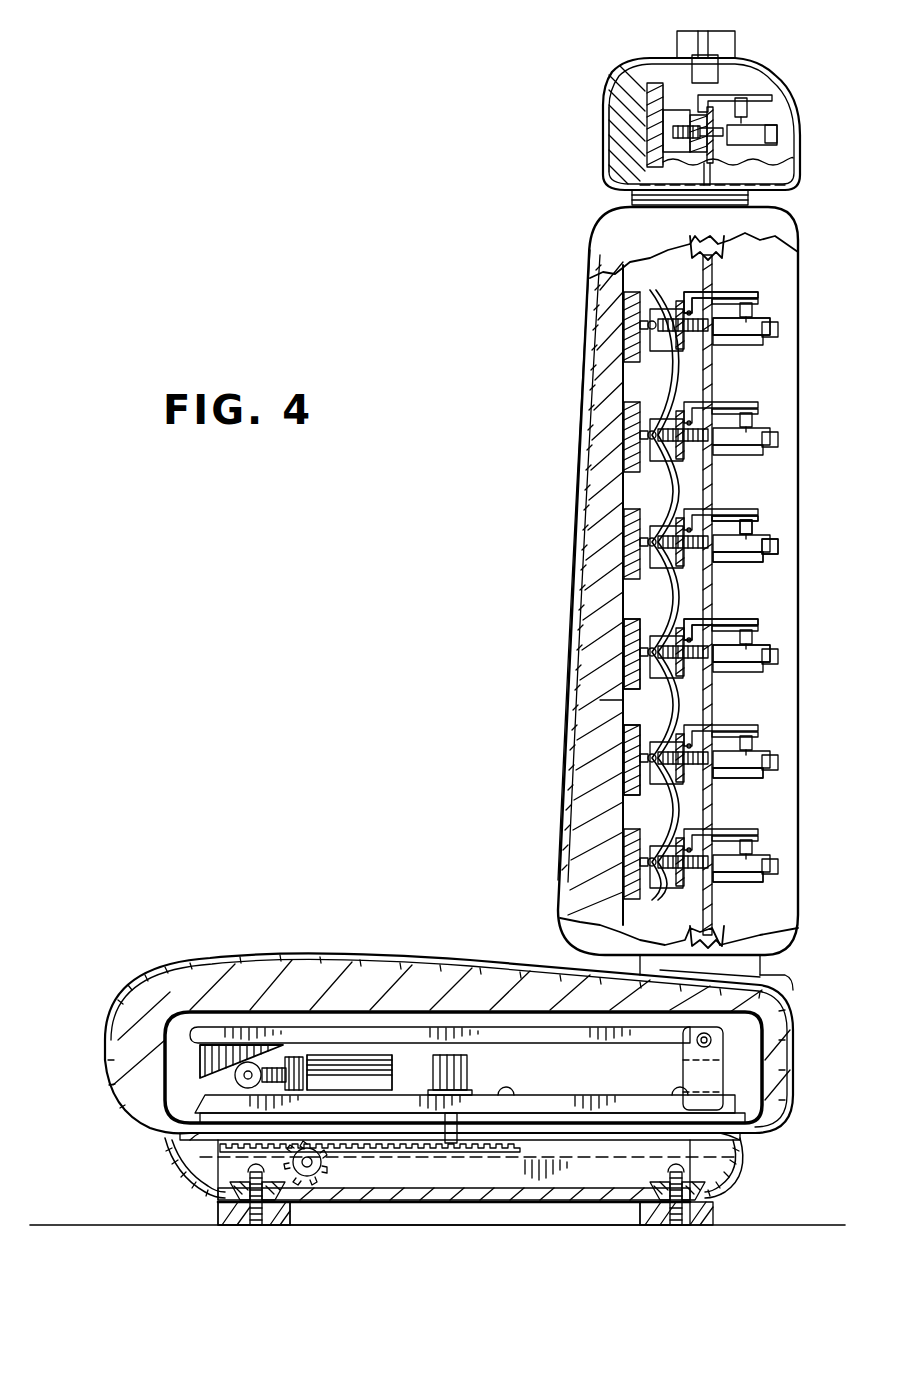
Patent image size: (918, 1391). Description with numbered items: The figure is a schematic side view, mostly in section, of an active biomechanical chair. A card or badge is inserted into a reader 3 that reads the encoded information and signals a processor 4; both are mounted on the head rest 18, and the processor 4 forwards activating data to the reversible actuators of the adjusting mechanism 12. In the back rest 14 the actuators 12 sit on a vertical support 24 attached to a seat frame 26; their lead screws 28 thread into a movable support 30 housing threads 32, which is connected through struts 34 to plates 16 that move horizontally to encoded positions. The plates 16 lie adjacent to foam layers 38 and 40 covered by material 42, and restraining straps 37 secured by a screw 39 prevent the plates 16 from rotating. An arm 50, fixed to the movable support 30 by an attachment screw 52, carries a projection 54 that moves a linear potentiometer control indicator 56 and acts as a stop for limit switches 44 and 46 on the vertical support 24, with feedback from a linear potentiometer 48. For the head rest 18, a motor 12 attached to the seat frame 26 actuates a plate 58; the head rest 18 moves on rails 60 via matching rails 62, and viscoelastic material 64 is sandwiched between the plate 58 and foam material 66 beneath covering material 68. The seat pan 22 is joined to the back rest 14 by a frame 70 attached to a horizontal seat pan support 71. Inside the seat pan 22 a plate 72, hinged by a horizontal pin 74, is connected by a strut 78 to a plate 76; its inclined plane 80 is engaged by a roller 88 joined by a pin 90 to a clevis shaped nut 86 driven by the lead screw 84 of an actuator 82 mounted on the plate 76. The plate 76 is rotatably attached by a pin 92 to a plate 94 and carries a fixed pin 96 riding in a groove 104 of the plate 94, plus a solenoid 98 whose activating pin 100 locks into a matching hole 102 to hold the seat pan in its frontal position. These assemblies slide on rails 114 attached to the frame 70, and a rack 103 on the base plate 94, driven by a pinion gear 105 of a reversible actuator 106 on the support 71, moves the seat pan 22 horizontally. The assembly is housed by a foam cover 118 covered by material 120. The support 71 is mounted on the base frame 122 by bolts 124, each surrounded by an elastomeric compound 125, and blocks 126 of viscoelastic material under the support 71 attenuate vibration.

The reader 3 is at (735, 48).
The processor 4 is at (725, 72).
The adjusting mechanism actuators 12 is at (762, 115).
The back rest 14 is at (590, 240).
The plates 16 is at (620, 745).
The head rest 18 is at (600, 178).
The seat pan 22 is at (105, 1030).
The vertical support 24 is at (712, 270).
The seat frame 26 is at (715, 245).
The lead screws 28 is at (690, 655).
The movable support 30 is at (700, 785).
The threads 32 is at (700, 880).
The struts 34 is at (660, 600).
The restraining straps 37 is at (625, 705).
The foam layer 38 is at (620, 345).
The screw 39 is at (620, 655).
The foam layer 40 is at (605, 400).
The covering material 42 is at (628, 300).
The limit switch 44 is at (758, 312).
The limit switch 46 is at (740, 332).
The linear potentiometer 48 is at (762, 562).
The arm 50 is at (740, 508).
The attachment screw 52 is at (705, 630).
The projection 54 is at (745, 528).
The linear potentiometer control indicator 56 is at (770, 533).
The head support plate 58 is at (655, 82).
The rails 60 is at (750, 205).
The matching rails 62 is at (745, 196).
The viscoelastic material 64 is at (635, 75).
The foam material 66 is at (610, 122).
The covering material 68 is at (603, 145).
The frame 70 is at (785, 975).
The horizontal seat pan support 71 is at (585, 1205).
The plate 72 is at (550, 1040).
The horizontal pin 74 is at (710, 1040).
The plate 76 is at (200, 1112).
The strut 78 is at (712, 1078).
The inclined plane 80 is at (205, 1027).
The actuator 82 is at (380, 1055).
The lead screw 84 is at (345, 1055).
The clevis shaped nut 86 is at (300, 1058).
The roller 88 is at (275, 1068).
The pin 90 is at (248, 1062).
The pin 92 is at (680, 1090).
The base plate 94 is at (745, 1118).
The fixed pin 96 is at (506, 1088).
The solenoid 98 is at (452, 1055).
The activating pin 100 is at (490, 1195).
The matching hole 102 is at (455, 1195).
The rack 103 is at (385, 1150).
The groove 104 is at (530, 1140).
The pinion gear 105 is at (307, 1180).
The reversible actuator 106 is at (330, 1200).
The rails 114 is at (750, 1140).
The cover 118 is at (185, 990).
The covering material 120 is at (103, 1065).
The base frame 122 is at (755, 1226).
The bolts 124 is at (690, 1190).
The elastomeric compound 125 is at (225, 1195).
The viscoelastic blocks 126 is at (715, 1212).